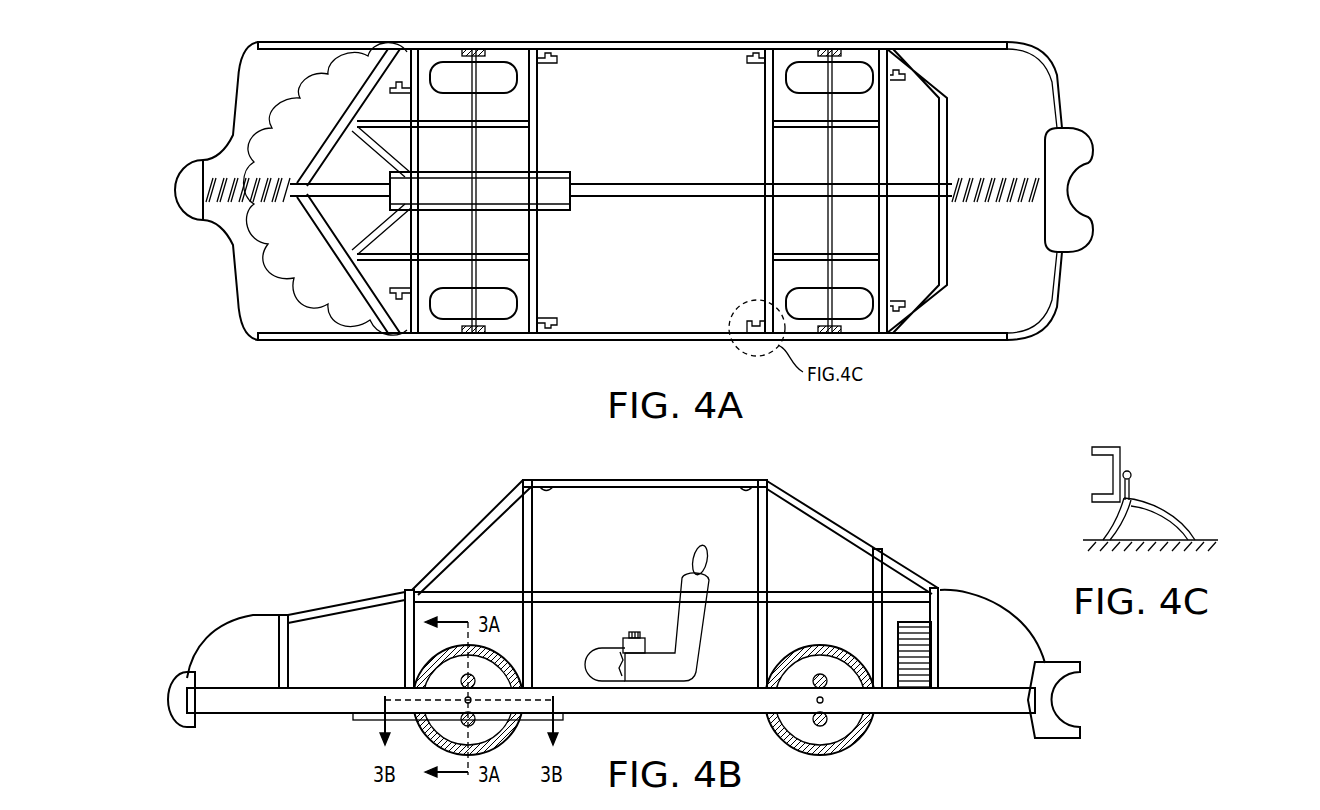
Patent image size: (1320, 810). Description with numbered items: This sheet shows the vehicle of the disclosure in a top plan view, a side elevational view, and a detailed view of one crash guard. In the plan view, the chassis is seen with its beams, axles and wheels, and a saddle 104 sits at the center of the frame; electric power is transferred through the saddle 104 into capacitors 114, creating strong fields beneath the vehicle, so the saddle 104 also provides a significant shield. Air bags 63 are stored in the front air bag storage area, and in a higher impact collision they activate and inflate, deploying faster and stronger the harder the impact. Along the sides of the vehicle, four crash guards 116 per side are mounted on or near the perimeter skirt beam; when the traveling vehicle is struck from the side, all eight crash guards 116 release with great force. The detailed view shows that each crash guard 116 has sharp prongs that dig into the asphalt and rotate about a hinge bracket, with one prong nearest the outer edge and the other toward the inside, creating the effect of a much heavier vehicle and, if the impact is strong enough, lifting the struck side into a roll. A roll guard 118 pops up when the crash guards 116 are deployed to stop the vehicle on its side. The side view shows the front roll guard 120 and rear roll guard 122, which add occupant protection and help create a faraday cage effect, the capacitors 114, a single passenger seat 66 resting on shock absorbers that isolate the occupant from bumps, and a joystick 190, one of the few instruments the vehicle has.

In FIG. 4A, the air bags 63 is at (252, 304).
In FIG. 4A, the saddle 104 is at (577, 172).
In FIG. 4A, the crash guard 116 is at (390, 88).
In FIG. 4C, the crash guard 116 is at (1165, 391).
In FIG. 4B, the roll guard 118 is at (548, 488).
In FIG. 4B, the front roll guard 120 is at (535, 518).
In FIG. 4B, the rear roll guard 122 is at (757, 518).
In FIG. 4B, the passenger seat 66 is at (684, 584).
In FIG. 4B, the joystick 190 is at (622, 645).
In FIG. 4B, the capacitors 114 is at (913, 627).